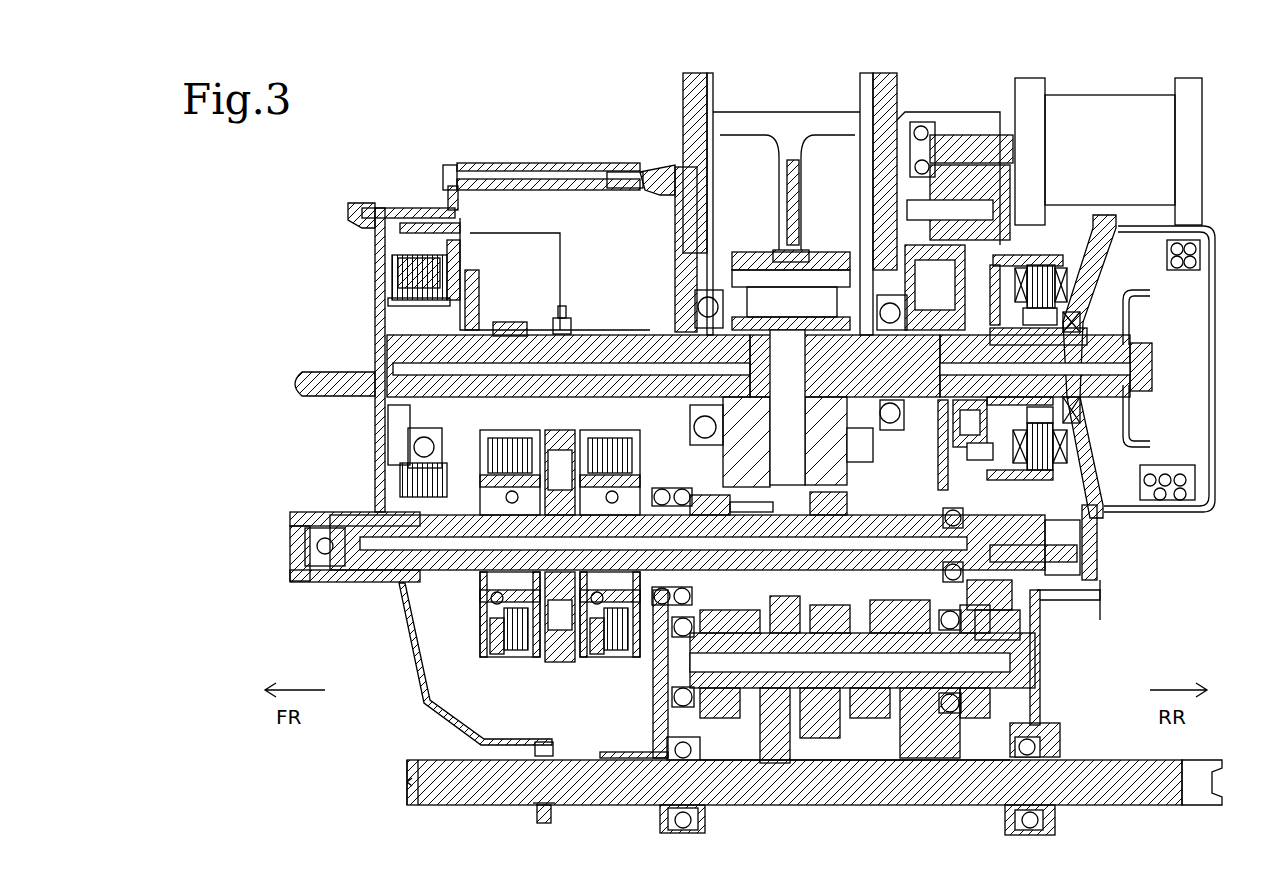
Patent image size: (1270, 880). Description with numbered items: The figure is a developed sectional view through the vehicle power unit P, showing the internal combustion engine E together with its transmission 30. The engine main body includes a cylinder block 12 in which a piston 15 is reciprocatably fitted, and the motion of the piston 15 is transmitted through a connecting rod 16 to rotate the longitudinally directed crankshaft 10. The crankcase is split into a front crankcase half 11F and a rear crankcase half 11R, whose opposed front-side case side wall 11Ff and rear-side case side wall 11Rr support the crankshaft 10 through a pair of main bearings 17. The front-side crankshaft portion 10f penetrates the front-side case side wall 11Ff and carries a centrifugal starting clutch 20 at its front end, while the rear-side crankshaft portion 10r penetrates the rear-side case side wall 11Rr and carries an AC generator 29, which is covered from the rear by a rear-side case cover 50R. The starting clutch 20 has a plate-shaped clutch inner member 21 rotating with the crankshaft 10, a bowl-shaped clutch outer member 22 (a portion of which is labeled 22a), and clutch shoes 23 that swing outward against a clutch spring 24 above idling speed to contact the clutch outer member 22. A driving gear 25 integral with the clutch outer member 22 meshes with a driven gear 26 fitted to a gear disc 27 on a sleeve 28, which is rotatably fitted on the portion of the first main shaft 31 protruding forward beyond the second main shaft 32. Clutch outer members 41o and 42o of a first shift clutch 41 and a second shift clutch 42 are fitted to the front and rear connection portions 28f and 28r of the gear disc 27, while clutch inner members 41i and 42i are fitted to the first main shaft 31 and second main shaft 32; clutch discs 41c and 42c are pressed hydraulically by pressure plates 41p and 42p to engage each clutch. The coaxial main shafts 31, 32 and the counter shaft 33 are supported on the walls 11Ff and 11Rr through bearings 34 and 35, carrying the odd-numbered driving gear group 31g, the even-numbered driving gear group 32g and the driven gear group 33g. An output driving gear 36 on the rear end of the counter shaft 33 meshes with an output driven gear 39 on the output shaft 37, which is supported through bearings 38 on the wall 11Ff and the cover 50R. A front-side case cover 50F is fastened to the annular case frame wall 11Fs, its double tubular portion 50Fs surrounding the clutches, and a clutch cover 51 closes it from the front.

The crankshaft 10 is at (680, 333).
The front-side crankshaft portion 10f is at (632, 338).
The rear-side crankshaft portion 10r is at (931, 390).
The front crankcase half 11F is at (455, 200).
The front-side case side wall 11Ff is at (672, 265).
The case frame wall 11Fs is at (622, 165).
The rear crankcase half 11R is at (963, 110).
The rear-side case side wall 11Rr is at (882, 224).
The cylinder block 12 is at (690, 165).
The piston 15 is at (845, 102).
The connecting rod 16 is at (800, 192).
The main bearings 17 is at (712, 296).
The centrifugal starting clutch 20 is at (520, 252).
The clutch inner member 21 is at (478, 262).
The clutch outer member 22 is at (405, 222).
The hub 22a is at (505, 320).
The clutch shoes 23 is at (395, 262).
The clutch spring 24 is at (400, 440).
The driving gear 25 is at (563, 318).
The driven gear 26 is at (550, 675).
The gear disc 27 is at (565, 692).
The sleeve 28 is at (478, 593).
The front connection portion 28f is at (447, 452).
The rear connection portion 28r is at (685, 455).
The AC generator 29 is at (1075, 252).
The transmission 30 is at (838, 755).
The first main shaft 31 is at (795, 525).
The odd-numbered speed stage transmission driving gear group 31g is at (860, 482).
The second main shaft 32 is at (722, 500).
The even-numbered speed stage transmission driving gear group 32g is at (745, 496).
The counter shaft 33 is at (914, 685).
The transmission driven gear group 33g is at (840, 735).
The bearings 34 is at (663, 488).
The bearings 35 is at (668, 760).
The output driving gear 36 is at (1012, 624).
The output shaft 37 is at (875, 800).
The bearings 38 is at (700, 822).
The output driven gear 39 is at (1040, 722).
The first shift clutch 41 is at (494, 577).
The clutch discs 41c is at (507, 455).
The clutch inner member 41i is at (482, 614).
The clutch outer member 41o is at (495, 658).
The pressure plate 41p is at (525, 658).
The second shift clutch 42 is at (613, 581).
The clutch discs 42c is at (636, 453).
The clutch inner member 42i is at (618, 618).
The clutch outer member 42o is at (617, 658).
The pressure plate 42p is at (595, 658).
The front-side case cover 50F is at (532, 162).
The double tubular portion 50Fs is at (533, 755).
The rear-side case cover 50R is at (1037, 598).
The clutch cover 51 is at (378, 476).
The internal combustion engine E is at (933, 104).
The power unit P is at (1158, 580).